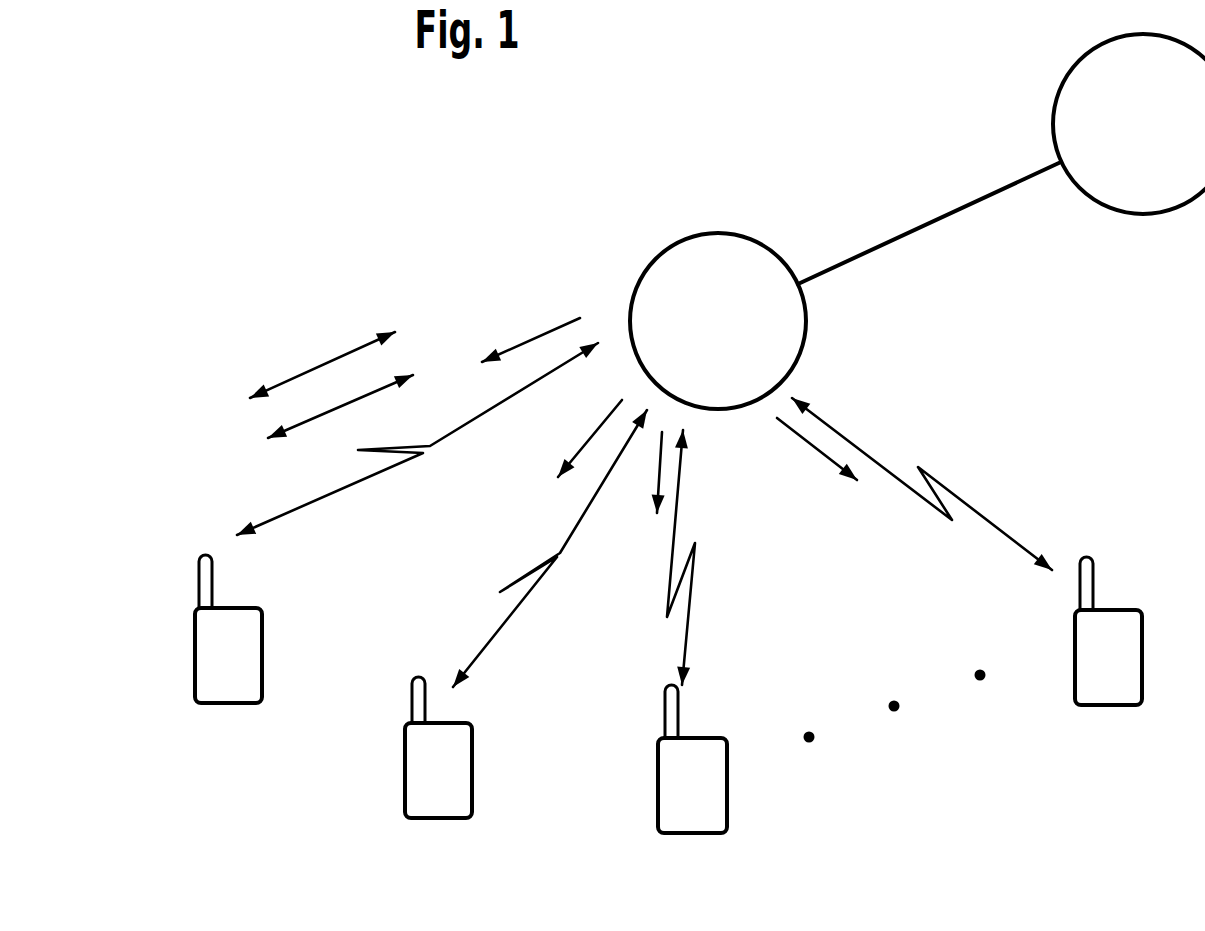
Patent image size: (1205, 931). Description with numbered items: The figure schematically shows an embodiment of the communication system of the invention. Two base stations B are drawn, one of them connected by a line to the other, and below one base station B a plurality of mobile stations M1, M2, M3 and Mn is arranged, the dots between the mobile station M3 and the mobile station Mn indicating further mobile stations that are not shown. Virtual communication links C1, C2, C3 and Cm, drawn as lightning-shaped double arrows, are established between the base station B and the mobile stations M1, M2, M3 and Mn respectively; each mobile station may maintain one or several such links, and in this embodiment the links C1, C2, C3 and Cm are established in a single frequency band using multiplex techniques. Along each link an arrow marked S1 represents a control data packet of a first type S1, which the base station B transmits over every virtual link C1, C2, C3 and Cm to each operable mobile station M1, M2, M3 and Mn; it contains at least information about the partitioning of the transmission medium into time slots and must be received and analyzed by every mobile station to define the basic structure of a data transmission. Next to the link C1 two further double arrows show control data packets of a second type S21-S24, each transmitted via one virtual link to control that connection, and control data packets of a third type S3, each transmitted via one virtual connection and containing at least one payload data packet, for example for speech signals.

The base station B is at (917, 221).
The mobile station M1 is at (228, 629).
The mobile station M2 is at (438, 747).
The mobile station M3 is at (692, 759).
The mobile station Mn is at (1108, 631).
The control data packet of a first type S1 is at (669, 399).
The control data packet of a third type S3 is at (340, 397).
The control data packets of a second type S21-S24 is at (321, 348).
The virtual communication link C1 is at (417, 439).
The virtual communication link C2 is at (550, 548).
The virtual communication link C3 is at (700, 557).
The virtual communication link Cm is at (922, 484).